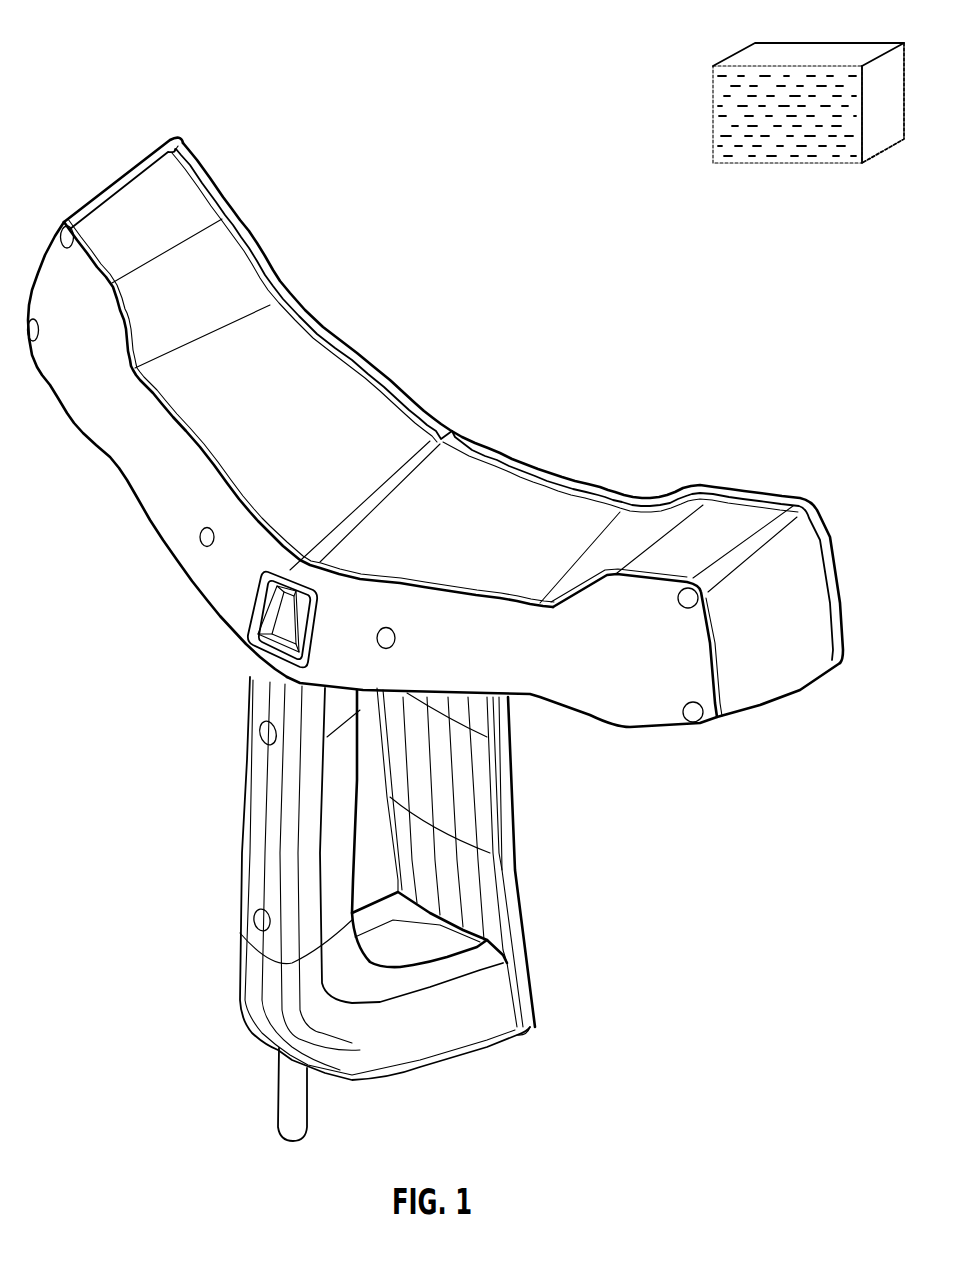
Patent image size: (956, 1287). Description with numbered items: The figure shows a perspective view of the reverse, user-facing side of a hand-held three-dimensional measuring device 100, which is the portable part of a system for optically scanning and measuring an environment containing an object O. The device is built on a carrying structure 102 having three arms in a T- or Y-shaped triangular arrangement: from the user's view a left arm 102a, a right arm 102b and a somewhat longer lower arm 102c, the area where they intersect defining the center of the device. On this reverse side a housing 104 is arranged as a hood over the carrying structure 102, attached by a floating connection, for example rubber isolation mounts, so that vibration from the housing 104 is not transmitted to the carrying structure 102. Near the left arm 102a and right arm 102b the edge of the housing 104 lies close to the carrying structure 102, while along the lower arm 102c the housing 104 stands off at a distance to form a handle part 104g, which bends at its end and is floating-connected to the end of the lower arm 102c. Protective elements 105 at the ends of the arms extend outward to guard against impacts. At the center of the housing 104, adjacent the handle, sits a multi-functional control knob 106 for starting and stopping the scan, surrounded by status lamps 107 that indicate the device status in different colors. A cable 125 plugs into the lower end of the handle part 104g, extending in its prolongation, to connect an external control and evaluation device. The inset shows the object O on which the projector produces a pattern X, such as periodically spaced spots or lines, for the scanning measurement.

The 3D measuring device 100 is at (206, 1046).
The carrying structure 102 is at (507, 753).
The left arm 102a is at (271, 273).
The right arm 102b is at (598, 488).
The lower arm 102c is at (520, 955).
The housing 104 is at (377, 418).
The handle part 104g is at (267, 850).
The protective elements 105 is at (185, 146).
The control knob 106 is at (255, 660).
The status lamps 107 is at (268, 602).
The cable 125 is at (287, 1098).
The object O is at (752, 55).
The pattern X is at (802, 154).